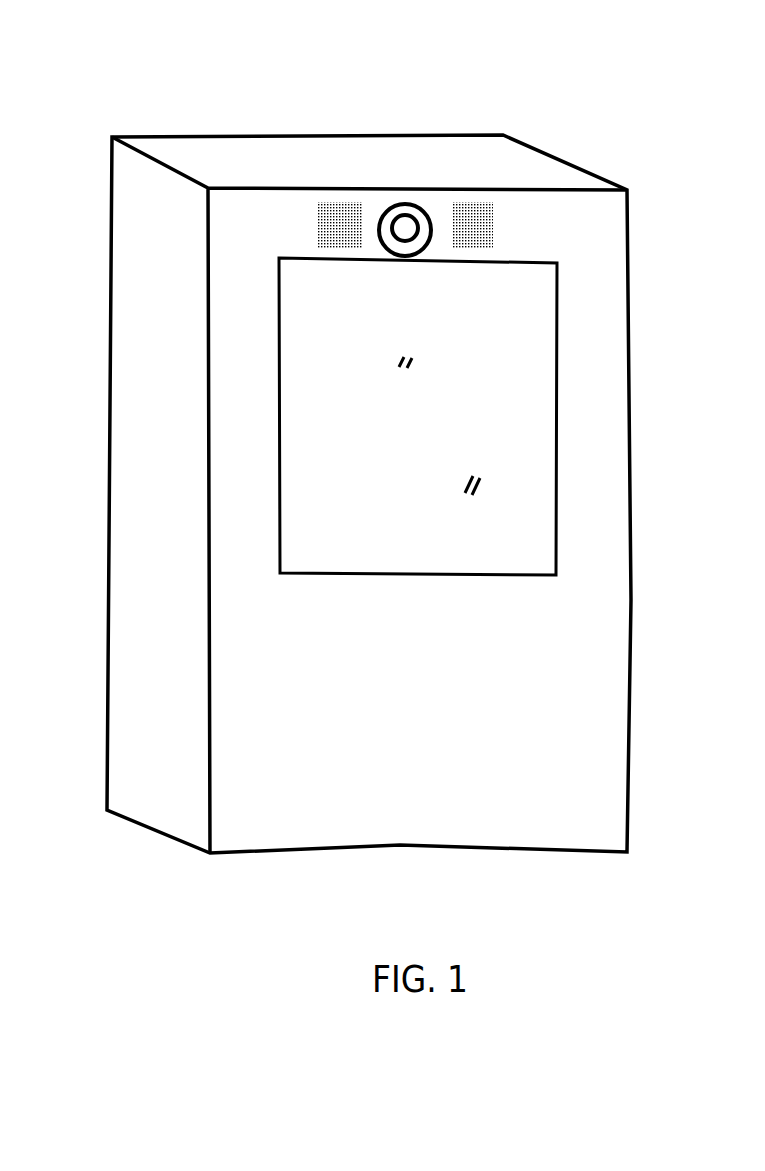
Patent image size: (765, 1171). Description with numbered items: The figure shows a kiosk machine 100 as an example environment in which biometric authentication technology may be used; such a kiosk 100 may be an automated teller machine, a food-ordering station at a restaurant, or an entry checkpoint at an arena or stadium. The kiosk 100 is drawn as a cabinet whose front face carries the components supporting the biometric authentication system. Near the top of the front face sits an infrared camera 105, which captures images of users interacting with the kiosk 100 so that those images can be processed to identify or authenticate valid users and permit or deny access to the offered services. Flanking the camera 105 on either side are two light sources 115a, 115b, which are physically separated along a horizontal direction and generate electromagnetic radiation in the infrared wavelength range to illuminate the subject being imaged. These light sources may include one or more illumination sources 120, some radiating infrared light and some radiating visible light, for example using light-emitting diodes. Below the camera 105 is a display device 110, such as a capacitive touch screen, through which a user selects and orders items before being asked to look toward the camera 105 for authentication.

The kiosk machine 100 is at (124, 71).
The infrared camera 105 is at (408, 213).
The display device 110 is at (543, 323).
The light source 115a is at (340, 205).
The light source 115b is at (478, 203).
The illumination source 120 is at (483, 238).